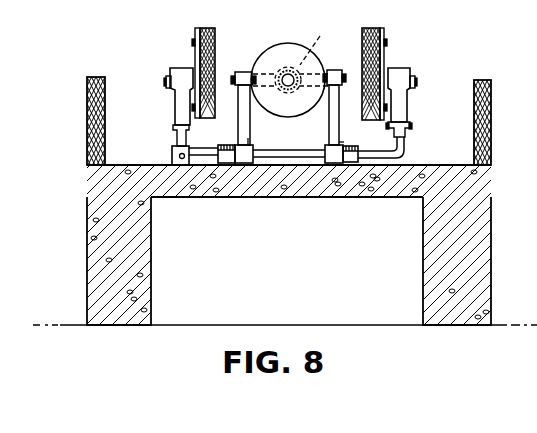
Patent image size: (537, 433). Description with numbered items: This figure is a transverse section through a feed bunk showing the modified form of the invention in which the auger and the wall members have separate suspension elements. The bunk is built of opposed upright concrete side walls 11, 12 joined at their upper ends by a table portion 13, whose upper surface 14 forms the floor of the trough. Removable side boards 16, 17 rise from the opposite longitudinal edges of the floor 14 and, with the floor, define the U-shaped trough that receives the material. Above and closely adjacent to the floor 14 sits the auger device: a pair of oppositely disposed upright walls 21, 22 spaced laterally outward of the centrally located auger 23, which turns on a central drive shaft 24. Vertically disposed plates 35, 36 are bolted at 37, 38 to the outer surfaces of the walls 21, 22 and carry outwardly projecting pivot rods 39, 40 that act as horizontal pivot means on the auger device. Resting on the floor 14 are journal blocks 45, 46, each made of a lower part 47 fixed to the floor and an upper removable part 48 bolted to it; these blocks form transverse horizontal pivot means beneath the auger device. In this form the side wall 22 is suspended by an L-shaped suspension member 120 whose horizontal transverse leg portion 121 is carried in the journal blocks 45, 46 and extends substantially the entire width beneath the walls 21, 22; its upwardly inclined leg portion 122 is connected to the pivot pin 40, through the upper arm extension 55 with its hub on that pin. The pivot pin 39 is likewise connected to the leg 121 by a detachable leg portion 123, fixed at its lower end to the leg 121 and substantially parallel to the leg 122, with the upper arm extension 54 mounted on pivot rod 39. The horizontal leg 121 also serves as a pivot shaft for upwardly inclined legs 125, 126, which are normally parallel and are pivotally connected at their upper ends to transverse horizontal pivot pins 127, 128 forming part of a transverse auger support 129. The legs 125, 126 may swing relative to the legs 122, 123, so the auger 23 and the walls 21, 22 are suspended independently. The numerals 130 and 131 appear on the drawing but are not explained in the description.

The side wall 11 is at (152, 270).
The side wall 12 is at (423, 267).
The table portion 13 is at (333, 187).
The upper surface (floor) 14 is at (430, 165).
The side board 16 is at (87, 110).
The side board 17 is at (491, 113).
The upright wall 21 is at (208, 28).
The upright wall 22 is at (375, 28).
The auger 23 is at (291, 49).
The central drive shaft 24 is at (280, 73).
The plate 35 is at (195, 55).
The plate 36 is at (384, 62).
The bolt 37 is at (196, 40).
The bolt 38 is at (387, 42).
The pivot rod 39 is at (167, 80).
The pivot rod 40 is at (414, 82).
The journal block 45 is at (222, 144).
The journal block 46 is at (341, 143).
The lower part 47 is at (227, 164).
The upper removable part 48 is at (226, 144).
The upper arm extension 54 is at (176, 101).
The upper arm extension 55 is at (398, 106).
The L-shaped suspension member 120 is at (405, 157).
The horizontal transverse leg portion 121 is at (287, 150).
The upwardly inclined leg portion 122 is at (405, 140).
The detachable leg portion 123 is at (174, 140).
The upwardly inclined leg 125 is at (248, 140).
The upwardly inclined leg 126 is at (329, 112).
The transverse horizontal pivot pin 127 is at (237, 72).
The transverse horizontal pivot pin 128 is at (333, 73).
The transverse auger support 129 is at (320, 42).
The left post base block 130 is at (256, 164).
The right post base block 131 is at (322, 164).